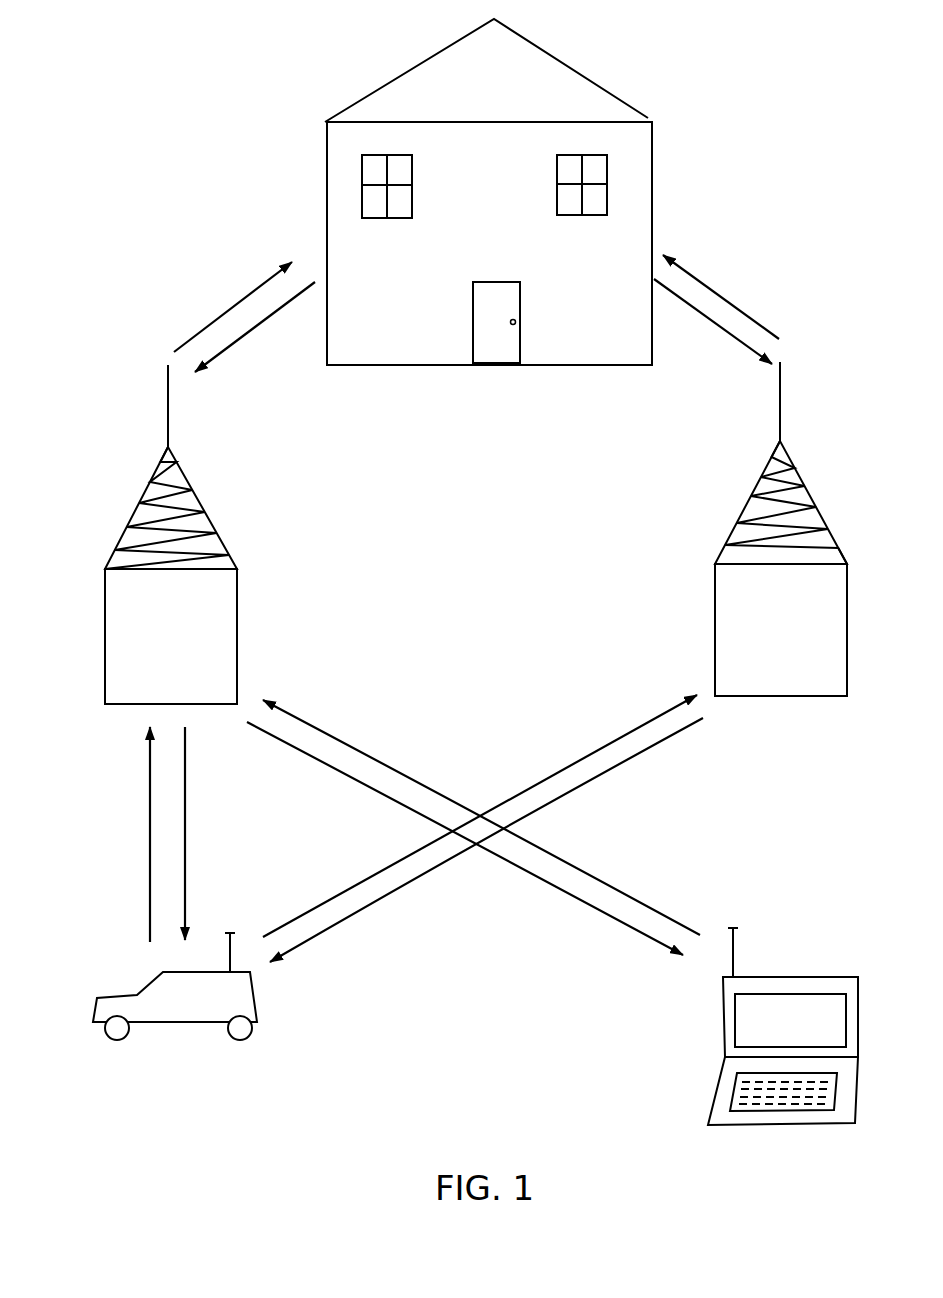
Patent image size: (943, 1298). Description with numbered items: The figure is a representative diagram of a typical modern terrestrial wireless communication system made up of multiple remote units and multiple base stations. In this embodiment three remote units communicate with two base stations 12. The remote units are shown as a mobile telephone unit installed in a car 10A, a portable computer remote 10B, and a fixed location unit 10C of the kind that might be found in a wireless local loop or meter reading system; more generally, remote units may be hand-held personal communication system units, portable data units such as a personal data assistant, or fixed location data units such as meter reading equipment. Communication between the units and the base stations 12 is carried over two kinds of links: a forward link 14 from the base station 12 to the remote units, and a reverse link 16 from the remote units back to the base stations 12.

The mobile telephone unit installed in a car 10A is at (117, 995).
The portable computer remote 10B is at (832, 975).
The fixed location unit 10C is at (567, 63).
The base station 12 is at (140, 502).
The forward link 14 is at (247, 292).
The reverse link 16 is at (270, 322).